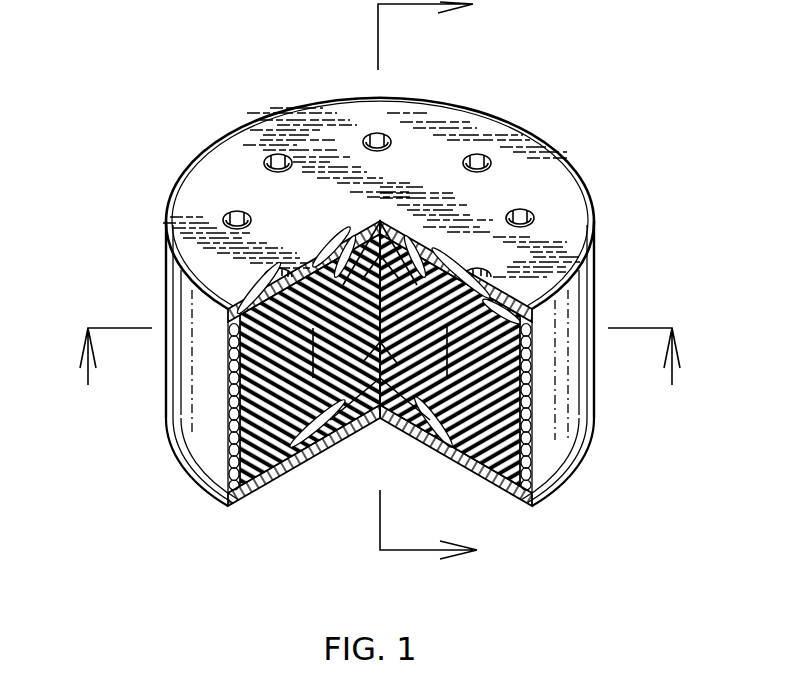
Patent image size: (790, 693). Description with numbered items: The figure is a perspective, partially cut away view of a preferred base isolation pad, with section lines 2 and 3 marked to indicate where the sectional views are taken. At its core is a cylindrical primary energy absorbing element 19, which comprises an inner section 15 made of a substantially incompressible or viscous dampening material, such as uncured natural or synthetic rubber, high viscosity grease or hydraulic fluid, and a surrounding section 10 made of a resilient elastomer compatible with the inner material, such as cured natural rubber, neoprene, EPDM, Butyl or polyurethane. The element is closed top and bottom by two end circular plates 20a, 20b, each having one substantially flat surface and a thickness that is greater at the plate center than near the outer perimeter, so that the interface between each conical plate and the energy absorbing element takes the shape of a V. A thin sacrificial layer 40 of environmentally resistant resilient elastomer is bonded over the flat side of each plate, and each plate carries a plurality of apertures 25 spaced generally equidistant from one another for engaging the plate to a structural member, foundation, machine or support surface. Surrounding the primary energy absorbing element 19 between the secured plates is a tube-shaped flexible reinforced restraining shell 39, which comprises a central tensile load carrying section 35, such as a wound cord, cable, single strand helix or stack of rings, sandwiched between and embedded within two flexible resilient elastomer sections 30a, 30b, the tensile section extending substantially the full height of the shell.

The section 10 is at (228, 413).
The inner section 15 is at (362, 352).
The primary energy absorbing element 19 is at (338, 275).
The end circular plate 20a is at (433, 267).
The end circular plate 20b is at (236, 500).
The apertures 25 is at (480, 155).
The flexible resilient section 30a is at (532, 423).
The flexible resilient section 30b is at (492, 470).
The central tensile load carrying section 35 is at (552, 477).
The flexible reinforced restraining shell 39 is at (224, 446).
The sacrificial layer 40 is at (532, 318).
The section line 2- 2 is at (427, 293).
The section line 3- 3 is at (379, 351).